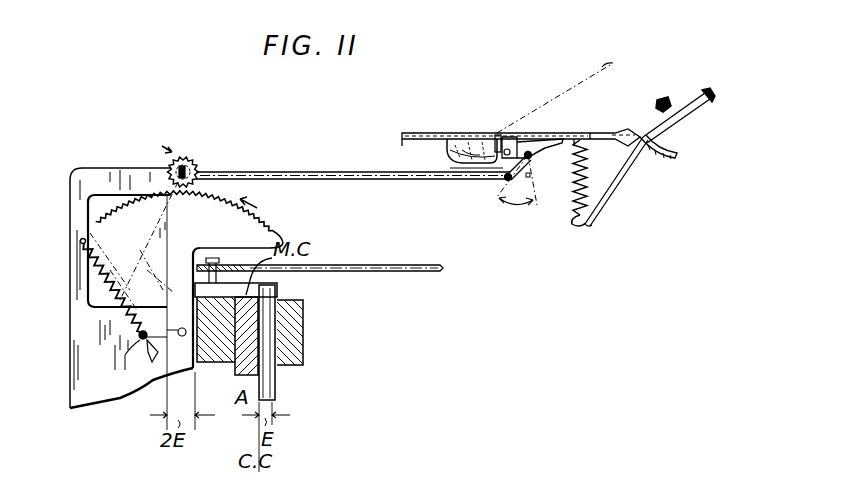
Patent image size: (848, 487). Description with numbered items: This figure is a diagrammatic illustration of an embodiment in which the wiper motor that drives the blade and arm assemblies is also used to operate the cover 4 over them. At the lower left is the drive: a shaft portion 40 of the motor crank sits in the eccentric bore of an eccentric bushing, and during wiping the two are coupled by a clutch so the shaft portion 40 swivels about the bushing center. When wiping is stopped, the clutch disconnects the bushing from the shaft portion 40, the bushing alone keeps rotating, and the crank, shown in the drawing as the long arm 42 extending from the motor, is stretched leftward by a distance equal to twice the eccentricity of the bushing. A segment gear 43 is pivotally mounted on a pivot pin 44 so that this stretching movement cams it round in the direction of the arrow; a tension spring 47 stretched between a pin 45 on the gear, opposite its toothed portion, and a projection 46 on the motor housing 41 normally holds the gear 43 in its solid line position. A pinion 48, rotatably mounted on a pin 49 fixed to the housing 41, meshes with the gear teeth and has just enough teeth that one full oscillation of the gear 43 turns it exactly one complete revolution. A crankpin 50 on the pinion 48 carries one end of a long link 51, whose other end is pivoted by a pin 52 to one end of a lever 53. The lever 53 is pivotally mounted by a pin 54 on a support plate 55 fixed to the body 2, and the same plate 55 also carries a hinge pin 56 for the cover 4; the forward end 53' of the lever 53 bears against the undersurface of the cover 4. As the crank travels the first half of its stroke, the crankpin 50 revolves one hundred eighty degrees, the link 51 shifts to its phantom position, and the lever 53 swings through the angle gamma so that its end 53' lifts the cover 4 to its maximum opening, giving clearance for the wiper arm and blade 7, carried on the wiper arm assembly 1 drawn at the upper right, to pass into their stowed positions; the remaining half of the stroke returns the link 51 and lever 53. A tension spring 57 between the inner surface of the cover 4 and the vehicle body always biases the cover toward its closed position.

The operating lever 1 is at (698, 88).
The body 2 is at (424, 133).
The cover 4 is at (612, 131).
The blade 7 is at (660, 99).
The shaft portion 40 is at (278, 385).
The housing 41 is at (131, 170).
The arm 42 is at (375, 265).
The segment gear 43 is at (266, 231).
The pivot pin 44 is at (196, 368).
The pin 45 is at (125, 355).
The projection 46 is at (80, 241).
The tension spring 47 is at (112, 268).
The pinion 48 is at (191, 160).
The pin 49 is at (190, 172).
The crankpin 50 is at (180, 160).
The link 51 is at (340, 172).
The pin 52 is at (504, 180).
The lever 53 is at (461, 156).
The other end of the lever 53' is at (579, 125).
The pin 54 is at (530, 157).
The support plate 55 is at (467, 148).
The hinge pin 56 is at (497, 135).
The tension spring 57 is at (603, 175).